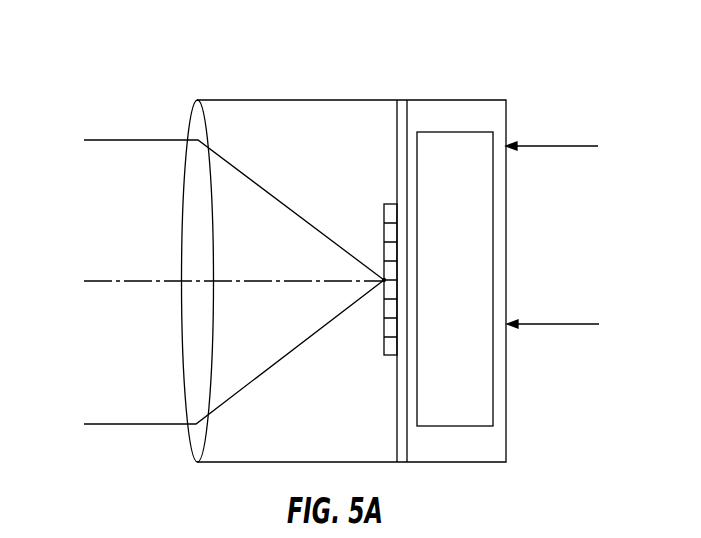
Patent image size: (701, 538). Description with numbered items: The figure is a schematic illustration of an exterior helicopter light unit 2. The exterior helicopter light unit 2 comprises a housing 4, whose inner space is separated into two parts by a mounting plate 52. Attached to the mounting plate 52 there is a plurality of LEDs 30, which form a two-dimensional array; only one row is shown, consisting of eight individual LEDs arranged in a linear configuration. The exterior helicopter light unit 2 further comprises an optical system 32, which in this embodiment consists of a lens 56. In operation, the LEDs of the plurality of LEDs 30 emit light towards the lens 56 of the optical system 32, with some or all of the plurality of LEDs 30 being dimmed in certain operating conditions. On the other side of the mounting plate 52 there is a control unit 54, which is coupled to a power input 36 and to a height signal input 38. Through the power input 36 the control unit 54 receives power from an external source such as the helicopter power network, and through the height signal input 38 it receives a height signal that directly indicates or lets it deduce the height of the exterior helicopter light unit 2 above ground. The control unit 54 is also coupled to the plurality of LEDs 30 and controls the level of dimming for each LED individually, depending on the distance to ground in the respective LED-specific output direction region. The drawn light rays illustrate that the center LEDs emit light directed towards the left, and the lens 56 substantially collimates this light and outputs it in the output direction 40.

The exterior helicopter light unit 2 is at (172, 88).
The housing 4 is at (499, 100).
The plurality of LEDs 30 is at (385, 332).
The optical system 32 is at (142, 348).
The power input 36 is at (575, 325).
The height signal input 38 is at (578, 146).
The output direction 40 is at (121, 281).
The mounting plate 52 is at (403, 100).
The control unit 54 is at (452, 132).
The lens 56 is at (198, 177).